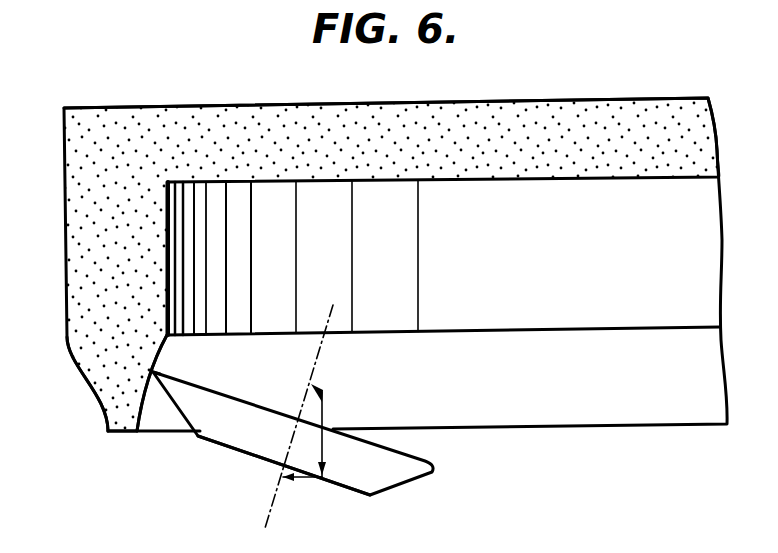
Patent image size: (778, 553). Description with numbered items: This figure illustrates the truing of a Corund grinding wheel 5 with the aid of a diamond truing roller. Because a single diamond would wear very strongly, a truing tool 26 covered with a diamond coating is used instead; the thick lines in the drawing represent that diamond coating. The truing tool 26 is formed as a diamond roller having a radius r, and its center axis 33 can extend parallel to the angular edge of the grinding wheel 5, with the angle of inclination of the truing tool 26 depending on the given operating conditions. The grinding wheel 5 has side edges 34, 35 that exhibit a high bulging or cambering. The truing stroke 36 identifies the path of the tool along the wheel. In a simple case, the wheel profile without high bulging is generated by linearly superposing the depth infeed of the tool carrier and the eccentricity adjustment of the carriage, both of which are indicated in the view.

The grinding wheel 5 is at (66, 253).
The truing tool 26 is at (238, 410).
The center axis 33 is at (317, 340).
The side edge 34 is at (89, 377).
The side edge 35 is at (141, 416).
The truing stroke 36 is at (287, 445).
The radius r is at (153, 374).